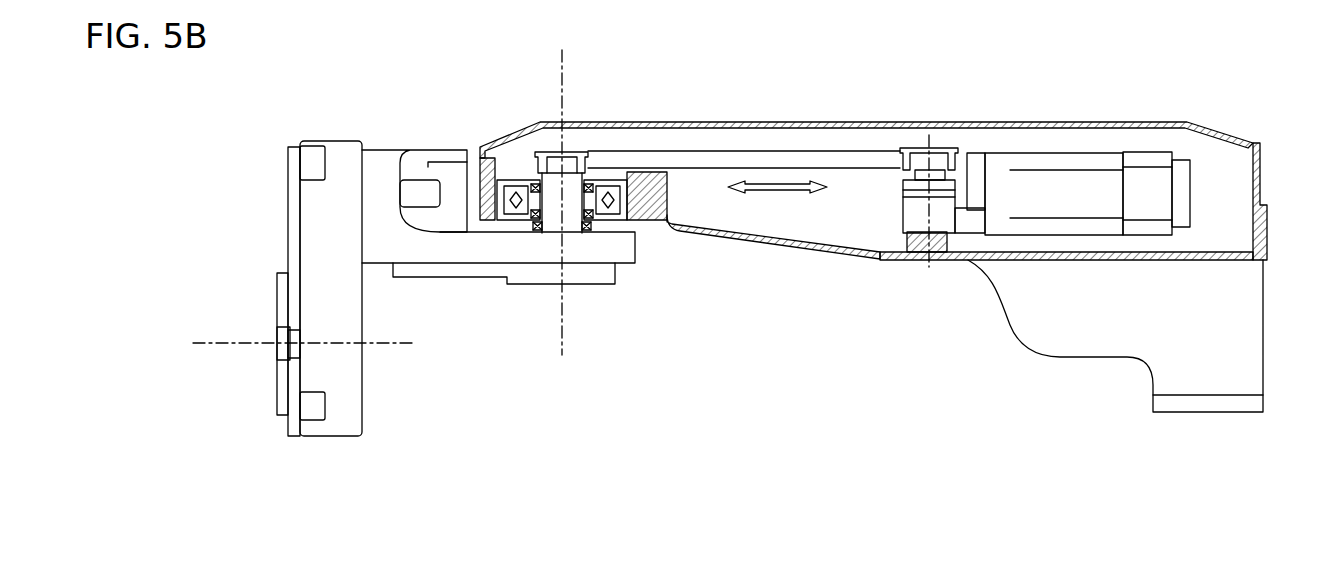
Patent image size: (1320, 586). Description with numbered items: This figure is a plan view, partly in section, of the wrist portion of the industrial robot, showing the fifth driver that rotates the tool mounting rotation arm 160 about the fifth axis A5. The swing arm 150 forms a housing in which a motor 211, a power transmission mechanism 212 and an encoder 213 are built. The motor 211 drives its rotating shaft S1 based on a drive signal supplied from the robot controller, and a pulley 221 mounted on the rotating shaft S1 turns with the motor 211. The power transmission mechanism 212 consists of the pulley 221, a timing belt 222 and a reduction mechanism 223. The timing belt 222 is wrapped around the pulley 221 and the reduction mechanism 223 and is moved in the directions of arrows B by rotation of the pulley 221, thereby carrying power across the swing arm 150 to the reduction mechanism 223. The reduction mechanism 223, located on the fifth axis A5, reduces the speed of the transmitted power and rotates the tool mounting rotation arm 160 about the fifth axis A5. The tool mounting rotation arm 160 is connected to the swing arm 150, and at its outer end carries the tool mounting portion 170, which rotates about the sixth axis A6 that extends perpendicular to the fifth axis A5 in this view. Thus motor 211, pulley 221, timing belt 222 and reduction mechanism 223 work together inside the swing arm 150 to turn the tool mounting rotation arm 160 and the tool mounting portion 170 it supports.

The swing arm 150 is at (1073, 117).
The tool mounting rotation arm 160 is at (380, 142).
The tool mounting portion 170 is at (302, 128).
The motor 211 is at (975, 190).
The power transmission mechanism 212 is at (746, 143).
The encoder 213 is at (1180, 185).
The pulley 221 is at (883, 165).
The timing belt 222 is at (785, 157).
The reduction mechanism 223 is at (587, 158).
The fifth axis A5 is at (562, 65).
The sixth axis A6 is at (248, 342).
The arrows B is at (777, 190).
The rotating shaft S1 is at (928, 207).